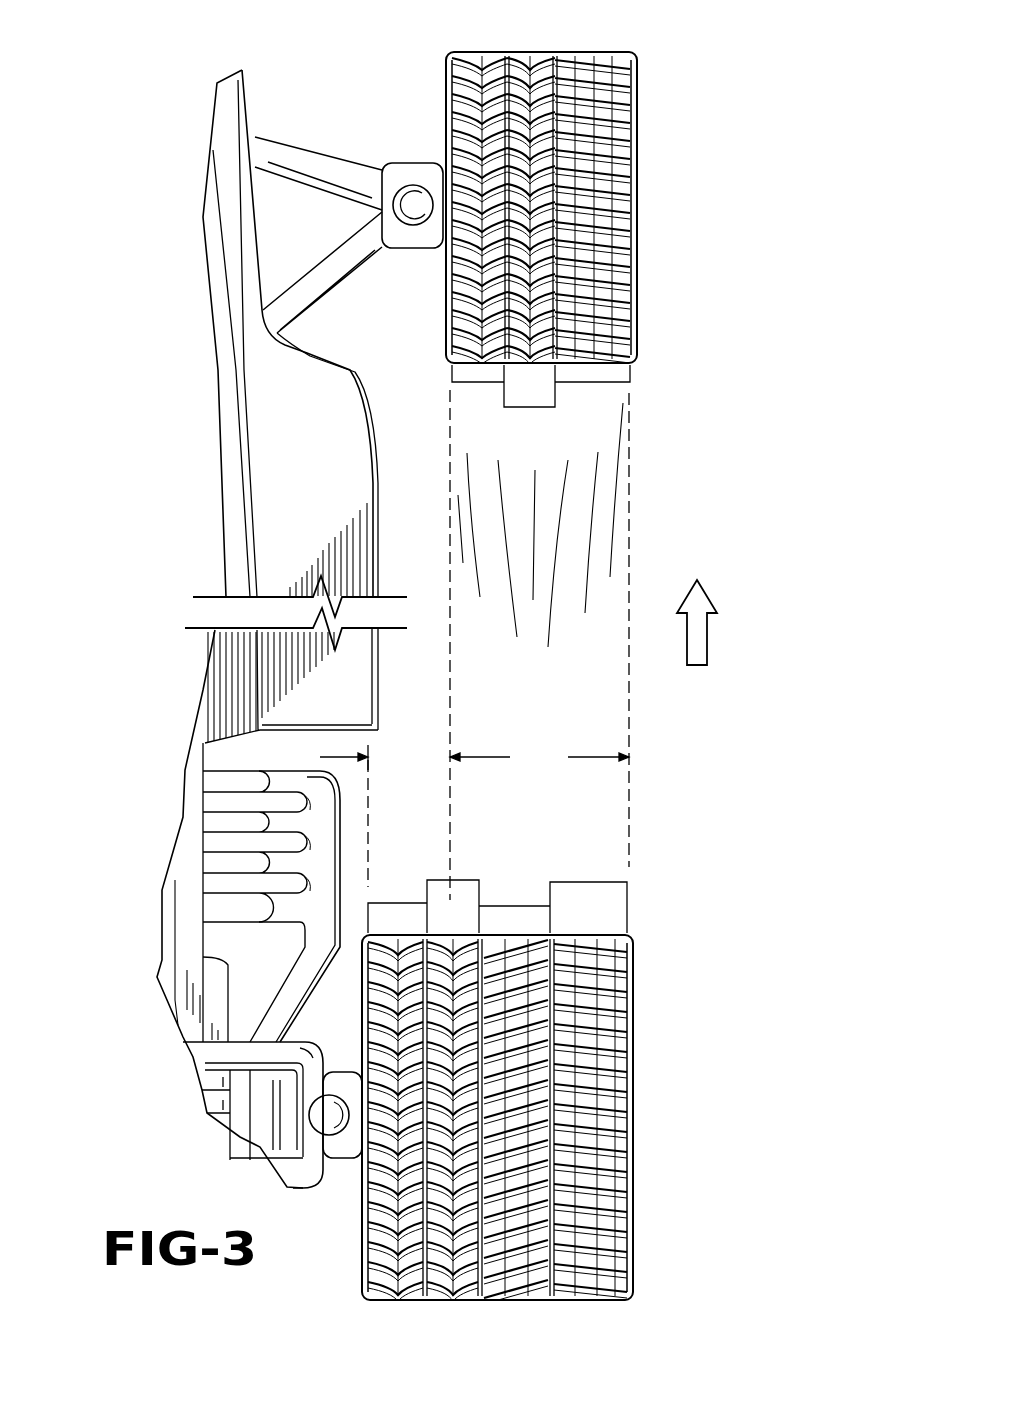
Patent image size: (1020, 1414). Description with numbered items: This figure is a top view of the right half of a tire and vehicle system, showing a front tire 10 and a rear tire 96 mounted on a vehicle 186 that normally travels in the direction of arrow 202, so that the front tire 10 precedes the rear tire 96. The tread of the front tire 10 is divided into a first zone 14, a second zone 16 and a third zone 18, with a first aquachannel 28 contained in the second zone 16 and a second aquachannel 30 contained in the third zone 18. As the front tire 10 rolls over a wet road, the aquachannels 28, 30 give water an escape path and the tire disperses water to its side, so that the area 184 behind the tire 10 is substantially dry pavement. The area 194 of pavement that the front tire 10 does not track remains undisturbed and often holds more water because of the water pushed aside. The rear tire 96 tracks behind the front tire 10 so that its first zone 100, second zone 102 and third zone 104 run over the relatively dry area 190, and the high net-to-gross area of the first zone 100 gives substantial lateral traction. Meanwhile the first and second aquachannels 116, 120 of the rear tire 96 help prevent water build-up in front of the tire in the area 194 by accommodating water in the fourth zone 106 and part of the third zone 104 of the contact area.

The tire 10 is at (563, 187).
The first aquachannel 28 is at (530, 52).
The second aquachannel 30 is at (483, 52).
The vehicle 186 is at (313, 372).
The third circumferentially extending zone 18 is at (480, 387).
The second circumferentially extending zone 16 is at (533, 407).
The first circumferentially extending zone 14 is at (588, 387).
The area behind tire 184 is at (562, 498).
The arrow 202 is at (705, 640).
The area 190 is at (539, 758).
The area 194 is at (374, 758).
The fourth zone 106 is at (400, 903).
The third zone 104 is at (465, 880).
The second zone 102 is at (515, 906).
The first zone 100 is at (597, 882).
The rear tire 96 is at (513, 1121).
The second aquachannel 120 is at (398, 1303).
The first aquachannel 116 is at (452, 1303).